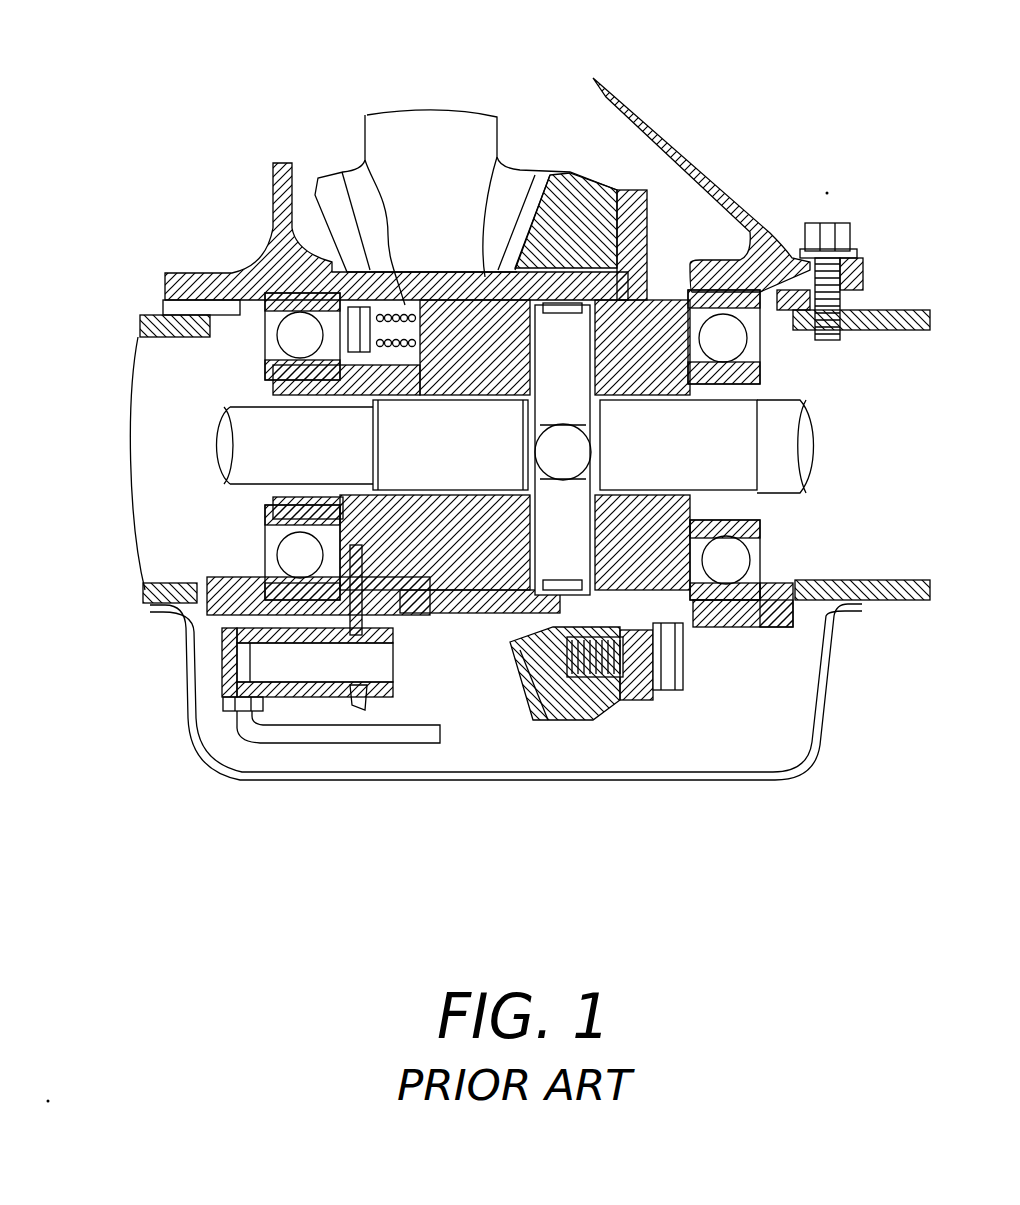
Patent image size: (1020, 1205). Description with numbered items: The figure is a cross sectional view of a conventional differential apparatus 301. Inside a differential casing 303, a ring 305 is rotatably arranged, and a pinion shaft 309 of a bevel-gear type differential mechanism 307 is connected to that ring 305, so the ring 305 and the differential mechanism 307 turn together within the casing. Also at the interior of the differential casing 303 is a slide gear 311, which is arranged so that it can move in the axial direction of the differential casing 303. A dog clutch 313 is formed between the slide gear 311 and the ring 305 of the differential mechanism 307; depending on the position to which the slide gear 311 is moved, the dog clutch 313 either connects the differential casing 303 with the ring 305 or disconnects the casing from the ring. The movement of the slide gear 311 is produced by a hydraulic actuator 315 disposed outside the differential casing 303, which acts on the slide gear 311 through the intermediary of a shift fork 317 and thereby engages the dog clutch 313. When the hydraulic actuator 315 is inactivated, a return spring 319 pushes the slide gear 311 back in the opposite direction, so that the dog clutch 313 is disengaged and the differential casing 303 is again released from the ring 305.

The differential apparatus 301 is at (684, 131).
The differential casing 303 is at (633, 189).
The ring 305 is at (527, 262).
The differential mechanism 307 is at (490, 626).
The pinion shaft 309 is at (565, 568).
The slide gear 311 is at (362, 160).
The dog clutch 313 is at (467, 603).
The hydraulic actuator 315 is at (222, 664).
The shift fork 317 is at (274, 560).
The return spring 319 is at (435, 392).